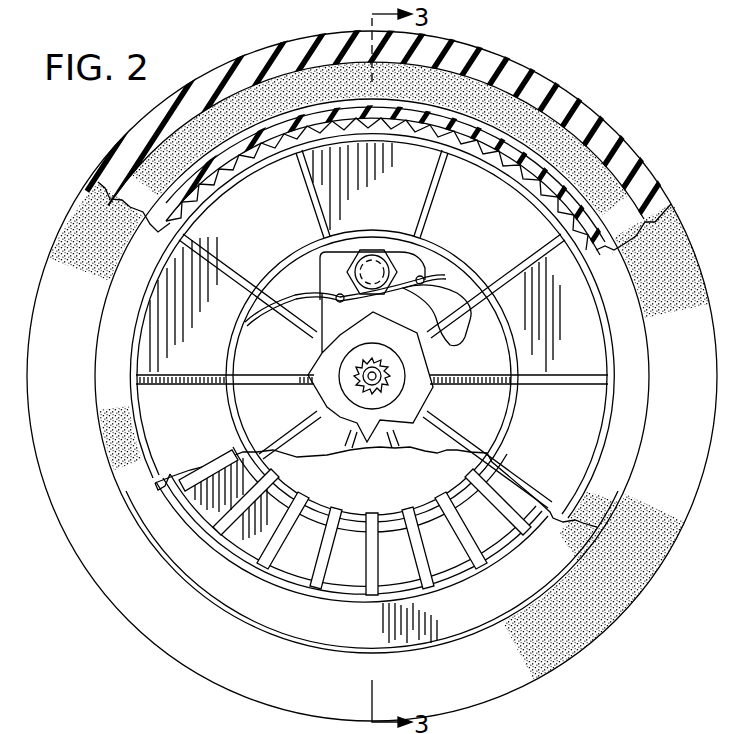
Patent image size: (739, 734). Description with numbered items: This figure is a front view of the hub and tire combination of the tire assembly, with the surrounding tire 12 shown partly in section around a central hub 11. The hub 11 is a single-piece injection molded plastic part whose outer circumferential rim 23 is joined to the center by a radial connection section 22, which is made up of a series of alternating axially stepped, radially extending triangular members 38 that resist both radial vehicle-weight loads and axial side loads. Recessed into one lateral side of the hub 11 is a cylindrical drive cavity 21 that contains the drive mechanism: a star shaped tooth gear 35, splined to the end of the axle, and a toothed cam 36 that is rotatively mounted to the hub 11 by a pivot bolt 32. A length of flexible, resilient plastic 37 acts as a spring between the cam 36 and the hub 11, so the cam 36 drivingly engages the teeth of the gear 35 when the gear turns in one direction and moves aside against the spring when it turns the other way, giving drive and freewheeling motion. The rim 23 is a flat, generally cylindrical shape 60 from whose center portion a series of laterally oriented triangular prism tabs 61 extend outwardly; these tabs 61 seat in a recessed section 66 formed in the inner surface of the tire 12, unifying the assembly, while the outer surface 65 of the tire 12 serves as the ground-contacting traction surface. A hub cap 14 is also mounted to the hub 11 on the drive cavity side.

The central hub 11 is at (512, 231).
The tire 12 is at (663, 533).
The hub cap 14 is at (409, 570).
The drive cavity 21 is at (280, 363).
The radial connection section 22 is at (586, 318).
The outer circumferential rim 23 is at (403, 143).
The pivot bolt 32 is at (373, 252).
The star shaped tooth gear 35 is at (347, 418).
The cam 36 is at (417, 268).
The flexible resilient plastic spring 37 is at (295, 292).
The triangular members 38 is at (213, 345).
The cylinder 60 is at (482, 136).
The tabs 61 is at (420, 126).
The outer surface 65 is at (633, 592).
The recessed section 66 is at (292, 118).